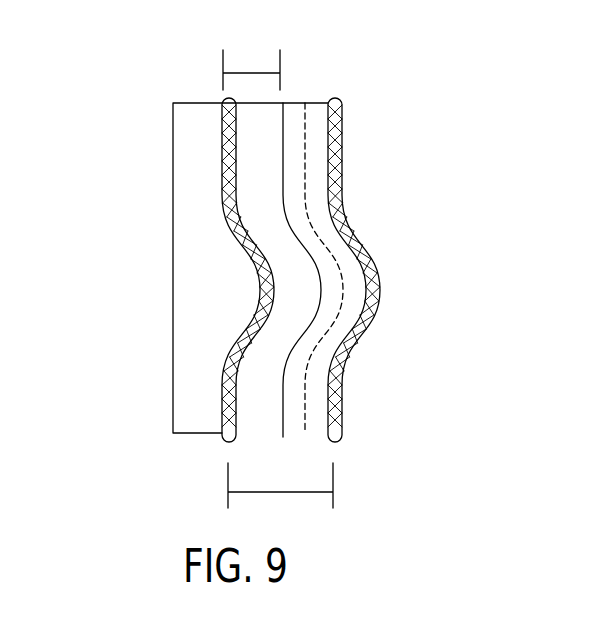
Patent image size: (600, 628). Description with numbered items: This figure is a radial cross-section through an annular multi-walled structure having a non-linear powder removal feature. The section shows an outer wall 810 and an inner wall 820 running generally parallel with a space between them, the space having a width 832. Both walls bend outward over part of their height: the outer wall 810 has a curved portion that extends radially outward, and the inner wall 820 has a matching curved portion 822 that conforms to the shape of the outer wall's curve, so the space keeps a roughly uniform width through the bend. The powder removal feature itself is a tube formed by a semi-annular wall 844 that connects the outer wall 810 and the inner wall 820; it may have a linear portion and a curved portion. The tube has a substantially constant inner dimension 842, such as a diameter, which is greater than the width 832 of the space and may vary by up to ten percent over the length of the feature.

The outer wall 810 is at (295, 92).
The inner wall 820 is at (177, 148).
The curved portion 822 is at (263, 290).
The semi-annular wall 844 is at (351, 157).
The width 832 is at (222, 66).
The inner dimension 842 is at (334, 480).